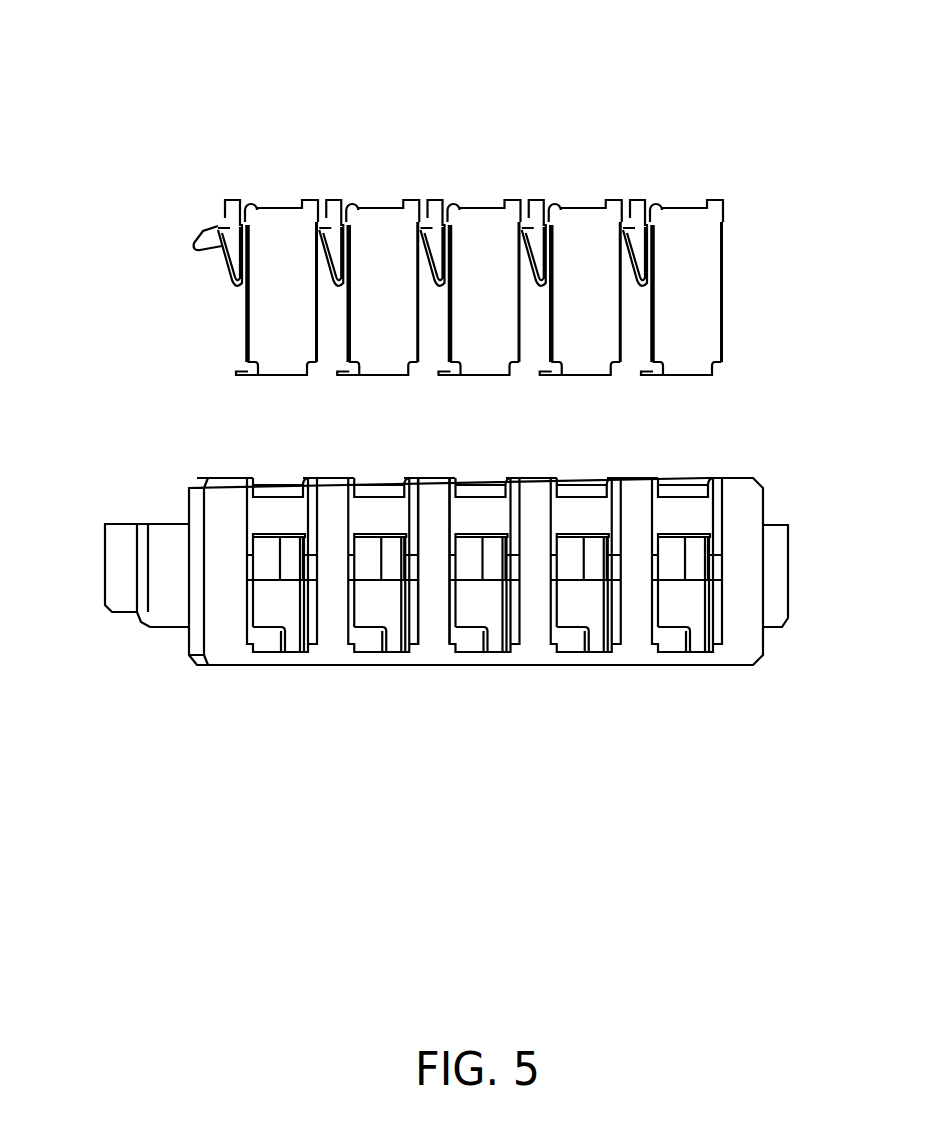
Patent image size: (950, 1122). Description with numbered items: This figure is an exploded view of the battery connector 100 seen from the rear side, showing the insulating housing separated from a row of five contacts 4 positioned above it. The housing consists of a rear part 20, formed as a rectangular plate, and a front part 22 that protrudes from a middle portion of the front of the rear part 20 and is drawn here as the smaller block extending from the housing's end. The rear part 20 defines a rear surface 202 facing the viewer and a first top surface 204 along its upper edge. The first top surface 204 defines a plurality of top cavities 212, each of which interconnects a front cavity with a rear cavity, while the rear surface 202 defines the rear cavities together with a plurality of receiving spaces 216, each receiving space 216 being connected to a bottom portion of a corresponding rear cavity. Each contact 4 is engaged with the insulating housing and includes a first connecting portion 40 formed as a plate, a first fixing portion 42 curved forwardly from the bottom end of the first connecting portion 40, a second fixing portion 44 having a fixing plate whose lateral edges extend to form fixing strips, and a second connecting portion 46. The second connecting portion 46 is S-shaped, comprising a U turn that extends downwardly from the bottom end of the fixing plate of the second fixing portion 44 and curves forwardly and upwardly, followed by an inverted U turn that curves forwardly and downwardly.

The battery connector 100 is at (70, 51).
The contact 4 is at (738, 272).
The first connecting portion 40 is at (270, 315).
The first fixing portion 42 is at (236, 374).
The second fixing portion 44 is at (281, 207).
The second connecting portion 46 is at (195, 245).
The rear part 20 is at (444, 572).
The front part 22 is at (143, 622).
The rear surface 202 is at (431, 635).
The first top surface 204 is at (432, 490).
The top cavity 212 is at (274, 485).
The receiving space 216 is at (262, 649).